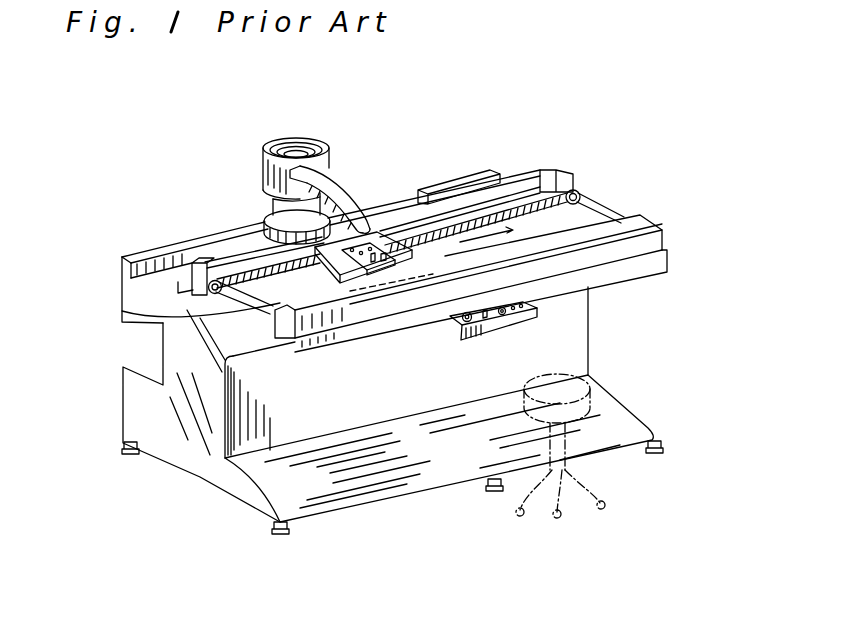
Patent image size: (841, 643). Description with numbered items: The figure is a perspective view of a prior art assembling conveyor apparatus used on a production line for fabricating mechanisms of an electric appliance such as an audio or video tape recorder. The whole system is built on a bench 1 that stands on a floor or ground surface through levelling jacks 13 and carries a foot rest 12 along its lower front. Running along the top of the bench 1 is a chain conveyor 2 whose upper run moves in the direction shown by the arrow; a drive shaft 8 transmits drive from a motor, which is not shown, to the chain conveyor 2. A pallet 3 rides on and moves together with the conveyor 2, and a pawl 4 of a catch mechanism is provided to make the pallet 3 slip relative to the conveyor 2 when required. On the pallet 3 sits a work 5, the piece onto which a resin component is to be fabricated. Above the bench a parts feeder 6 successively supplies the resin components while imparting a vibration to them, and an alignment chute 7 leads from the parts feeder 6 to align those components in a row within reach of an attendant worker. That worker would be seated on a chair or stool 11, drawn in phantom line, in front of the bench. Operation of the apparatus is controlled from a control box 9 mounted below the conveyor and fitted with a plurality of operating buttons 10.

The bench 1 is at (575, 315).
The chain conveyor 2 is at (272, 312).
The pallet 3 is at (372, 232).
The pawl 4 is at (433, 274).
The work 5 is at (380, 247).
The parts feeder 6 is at (330, 155).
The alignment chute 7 is at (350, 190).
The drive shaft 8 is at (163, 322).
The control box 9 is at (537, 316).
The operating buttons 10 is at (460, 322).
The chair or stool 11 is at (598, 393).
The foot rest 12 is at (398, 468).
The levelling jacks 13 is at (127, 449).